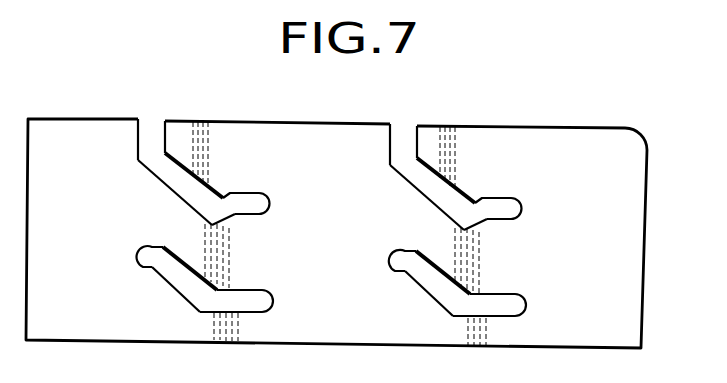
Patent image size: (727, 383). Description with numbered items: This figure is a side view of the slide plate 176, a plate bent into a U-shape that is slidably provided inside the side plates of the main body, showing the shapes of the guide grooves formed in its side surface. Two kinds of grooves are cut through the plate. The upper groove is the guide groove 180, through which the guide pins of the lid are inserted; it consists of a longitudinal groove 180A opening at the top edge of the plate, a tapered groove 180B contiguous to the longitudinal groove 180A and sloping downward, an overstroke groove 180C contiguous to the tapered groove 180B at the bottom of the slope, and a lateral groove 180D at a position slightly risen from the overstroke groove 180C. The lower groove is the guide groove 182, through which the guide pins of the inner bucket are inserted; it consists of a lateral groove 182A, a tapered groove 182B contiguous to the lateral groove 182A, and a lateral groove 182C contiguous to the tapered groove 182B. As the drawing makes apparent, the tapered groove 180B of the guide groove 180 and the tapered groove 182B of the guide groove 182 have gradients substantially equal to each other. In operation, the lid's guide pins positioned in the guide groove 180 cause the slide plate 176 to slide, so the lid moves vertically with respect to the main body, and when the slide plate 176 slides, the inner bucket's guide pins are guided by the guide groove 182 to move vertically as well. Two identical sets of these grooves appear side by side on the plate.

The slide plate 176 is at (570, 150).
The guide groove 180 is at (341, 161).
The longitudinal groove 180A is at (157, 138).
The tapered groove 180B is at (163, 181).
The overstroke groove 180C is at (209, 224).
The lateral groove 180D is at (258, 202).
The guide groove 182 is at (325, 280).
The lateral groove 182A is at (137, 256).
The tapered groove 182B is at (192, 290).
The lateral groove 182C is at (262, 302).